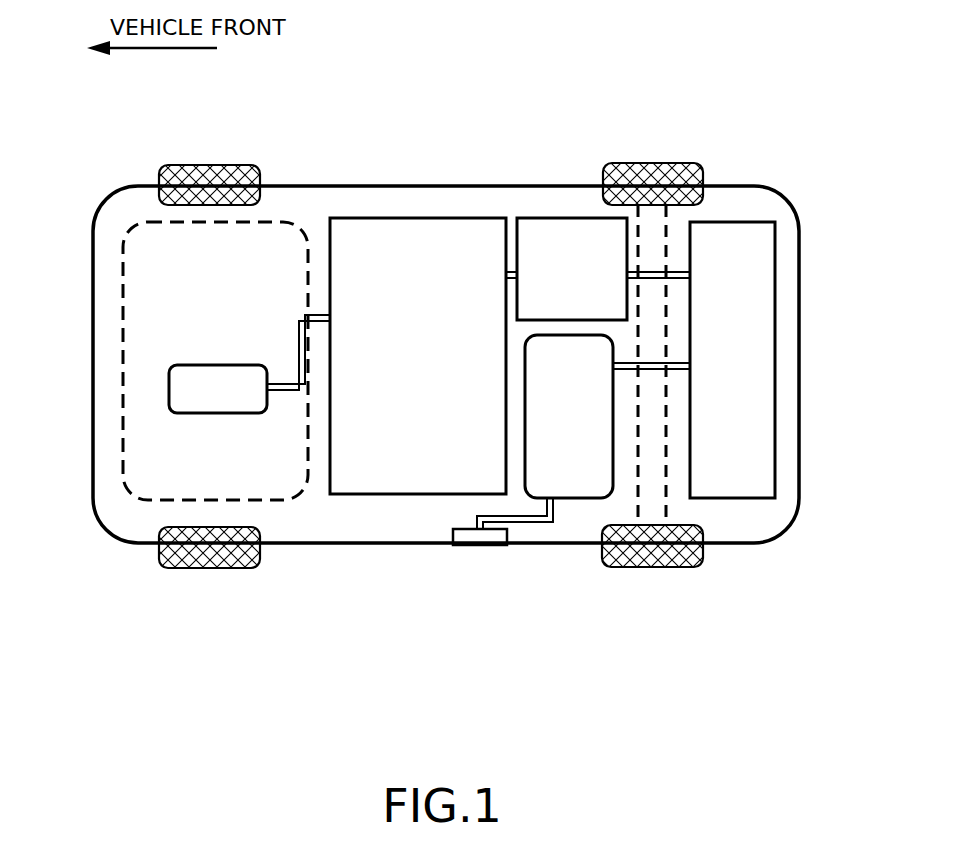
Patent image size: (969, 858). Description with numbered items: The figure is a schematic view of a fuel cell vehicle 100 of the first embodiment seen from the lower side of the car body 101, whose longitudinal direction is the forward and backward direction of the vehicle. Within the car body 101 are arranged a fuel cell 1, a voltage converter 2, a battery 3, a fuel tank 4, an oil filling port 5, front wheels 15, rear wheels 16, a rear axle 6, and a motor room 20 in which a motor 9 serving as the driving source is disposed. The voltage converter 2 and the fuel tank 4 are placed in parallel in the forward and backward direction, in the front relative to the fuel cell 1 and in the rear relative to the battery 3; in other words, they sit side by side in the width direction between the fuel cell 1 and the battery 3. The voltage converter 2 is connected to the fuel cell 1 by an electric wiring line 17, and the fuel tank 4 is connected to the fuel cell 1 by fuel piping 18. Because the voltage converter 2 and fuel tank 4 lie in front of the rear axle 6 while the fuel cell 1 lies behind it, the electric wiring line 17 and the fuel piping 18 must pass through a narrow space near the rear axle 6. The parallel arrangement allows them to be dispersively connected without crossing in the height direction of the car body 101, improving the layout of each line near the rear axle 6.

The fuel cell 1 is at (775, 260).
The voltage converter 2 is at (551, 218).
The battery 3 is at (422, 218).
The fuel tank 4 is at (575, 498).
The oil filling port 5 is at (465, 547).
The rear axle 6 is at (665, 510).
The motor 9 is at (169, 388).
The front wheels 15 is at (258, 164).
The rear wheels 16 is at (680, 162).
The electric wiring line 17 is at (672, 282).
The fuel piping 18 is at (672, 363).
The motor room 20 is at (123, 305).
The fuel cell vehicle 100 is at (790, 180).
The car body 101 is at (750, 545).